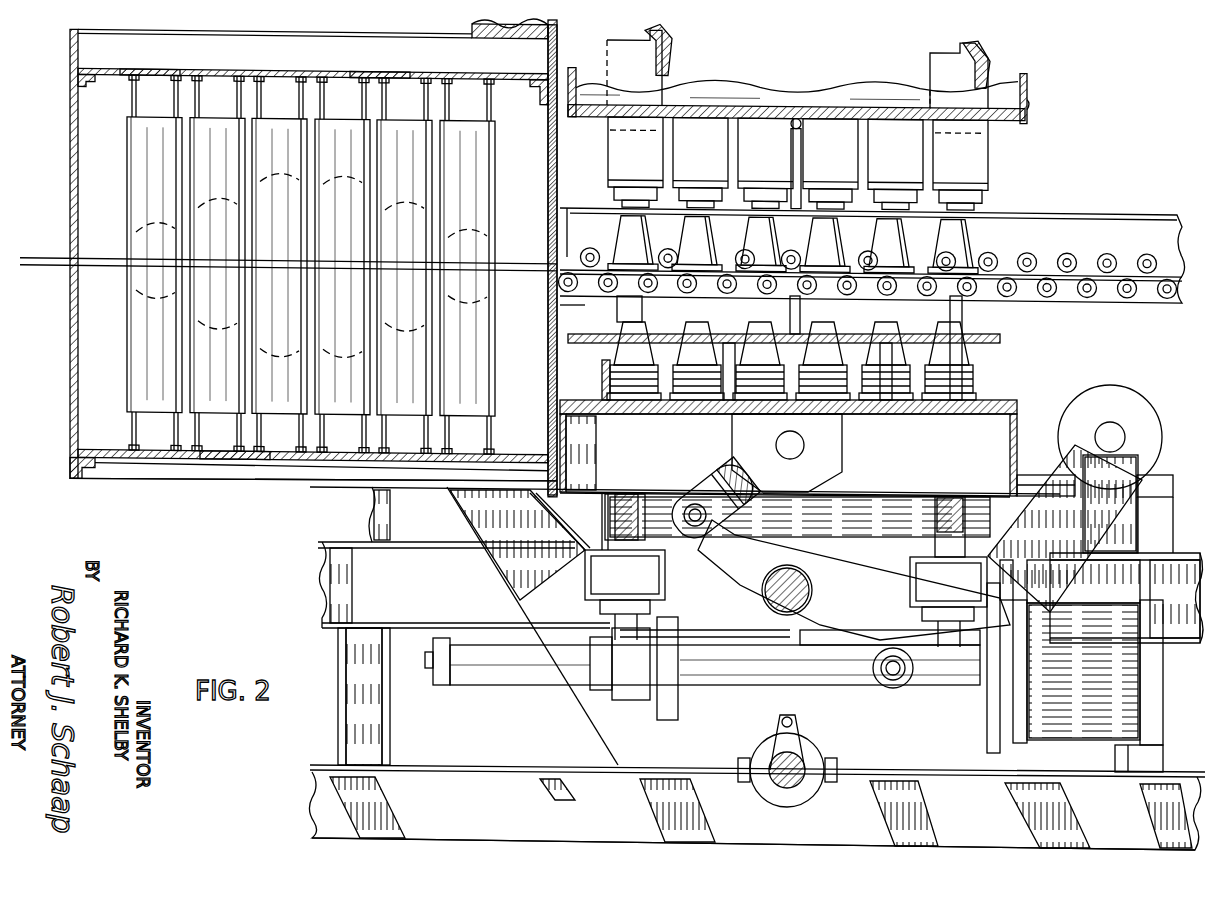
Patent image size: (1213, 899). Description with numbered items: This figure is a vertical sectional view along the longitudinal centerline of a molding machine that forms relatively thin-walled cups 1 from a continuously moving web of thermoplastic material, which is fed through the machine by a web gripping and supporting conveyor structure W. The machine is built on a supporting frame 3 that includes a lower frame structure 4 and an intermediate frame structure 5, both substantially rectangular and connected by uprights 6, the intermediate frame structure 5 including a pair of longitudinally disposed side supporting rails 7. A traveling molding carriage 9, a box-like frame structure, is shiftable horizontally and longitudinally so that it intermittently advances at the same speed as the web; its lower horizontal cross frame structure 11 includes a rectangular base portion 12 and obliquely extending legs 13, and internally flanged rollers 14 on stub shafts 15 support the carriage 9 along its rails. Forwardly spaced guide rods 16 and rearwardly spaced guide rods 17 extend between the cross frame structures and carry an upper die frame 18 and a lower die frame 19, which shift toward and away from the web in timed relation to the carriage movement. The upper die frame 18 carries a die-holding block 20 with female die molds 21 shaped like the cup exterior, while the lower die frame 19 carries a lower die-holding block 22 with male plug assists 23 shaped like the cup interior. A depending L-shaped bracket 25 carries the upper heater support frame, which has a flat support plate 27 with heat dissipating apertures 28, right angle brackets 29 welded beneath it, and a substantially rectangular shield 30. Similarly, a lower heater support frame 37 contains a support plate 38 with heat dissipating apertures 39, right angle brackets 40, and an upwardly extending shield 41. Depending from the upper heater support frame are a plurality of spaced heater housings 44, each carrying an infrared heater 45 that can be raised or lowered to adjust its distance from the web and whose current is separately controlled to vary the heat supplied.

The cups 1 is at (968, 215).
The supporting frame 3 is at (32, 258).
The lower frame structure 4 is at (32, 266).
The intermediate frame structure 5 is at (512, 766).
The uprights 6 is at (338, 735).
The side supporting rails 7 is at (1170, 553).
The traveling molding carriage 9 is at (1020, 472).
The lower horizontal cross frame structure 11 is at (585, 575).
The rectangular base portion 12 is at (645, 724).
The obliquely extending legs 13 is at (1082, 548).
The internally flanged rollers 14 is at (1148, 412).
The stub shafts 15 is at (1120, 438).
The forwardly spaced guide rods 16 is at (946, 42).
The rearwardly spaced guide rods 17 is at (648, 30).
The upper die frame 18 is at (1030, 95).
The lower die frame 19 is at (1018, 430).
The die-holding block 20 is at (722, 105).
The female die molds 21 is at (770, 130).
The lower die-holding block 22 is at (1005, 404).
The plug assists 23 is at (975, 380).
The L-shaped bracket 25 is at (490, 34).
The support plate 27 is at (266, 69).
The heat dissipating apertures 28 is at (348, 69).
The right angle brackets 29 is at (86, 84).
The shield 30 is at (557, 165).
The lower heater support frame 37 is at (270, 478).
The support plate 38 is at (186, 460).
The heat dissipating apertures 39 is at (225, 460).
The right angle brackets 40 is at (82, 478).
The shield 41 is at (70, 388).
The heater housings 44 is at (130, 140).
The heaters 45 is at (140, 230).
The web gripping and supporting conveyor structure W is at (1158, 258).